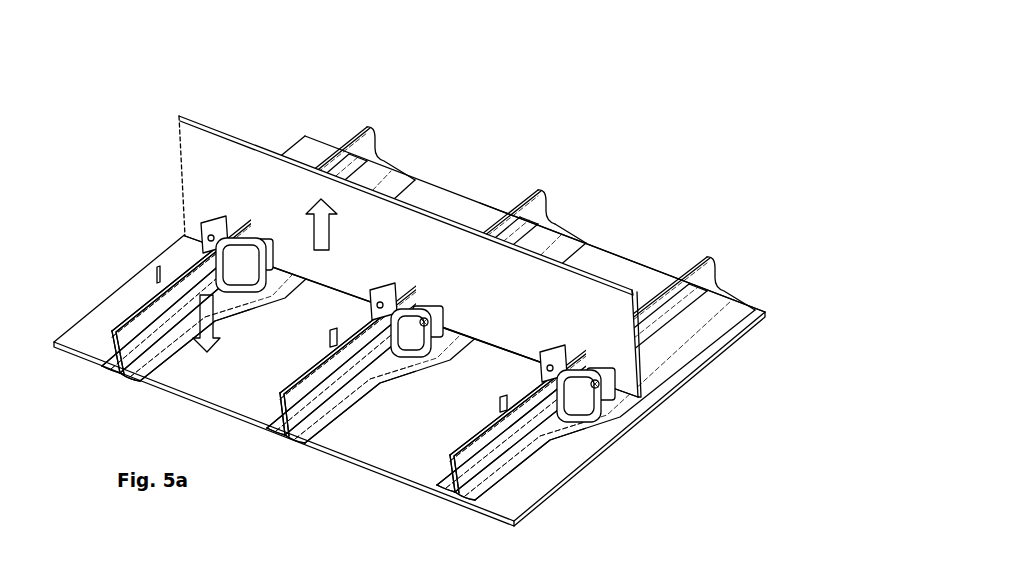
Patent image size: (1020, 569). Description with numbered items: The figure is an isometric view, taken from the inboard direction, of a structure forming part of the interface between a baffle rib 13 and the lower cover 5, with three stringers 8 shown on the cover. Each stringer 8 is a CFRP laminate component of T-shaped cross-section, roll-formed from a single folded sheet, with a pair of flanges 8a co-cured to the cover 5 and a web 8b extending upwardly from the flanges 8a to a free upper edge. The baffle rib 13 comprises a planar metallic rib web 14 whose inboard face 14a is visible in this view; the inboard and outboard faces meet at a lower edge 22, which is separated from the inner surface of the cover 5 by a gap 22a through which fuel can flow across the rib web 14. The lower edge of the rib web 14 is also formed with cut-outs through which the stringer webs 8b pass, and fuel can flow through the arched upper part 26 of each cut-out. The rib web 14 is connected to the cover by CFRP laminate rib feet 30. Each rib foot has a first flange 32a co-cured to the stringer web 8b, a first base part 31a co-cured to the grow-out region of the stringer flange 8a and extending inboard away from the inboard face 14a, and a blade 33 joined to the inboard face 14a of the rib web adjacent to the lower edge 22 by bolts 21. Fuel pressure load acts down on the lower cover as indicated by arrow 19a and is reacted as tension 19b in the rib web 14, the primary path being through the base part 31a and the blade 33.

The lower cover 5 is at (198, 372).
The stringer 8 is at (387, 137).
The flange 8a is at (328, 412).
The web 8b is at (320, 363).
The baffle rib 13 is at (605, 267).
The rib web 14 is at (230, 135).
The inboard face 14a is at (212, 157).
The arrow 19a is at (197, 338).
The tension 19b is at (319, 196).
The bolts 21 is at (597, 387).
The lower edge 22 is at (330, 288).
The gap 22a is at (497, 362).
The arched upper part 26 is at (240, 222).
The rib foot 30 is at (672, 435).
The first base part 31a is at (430, 350).
The first flange 32a is at (402, 323).
The blade 33 is at (427, 320).